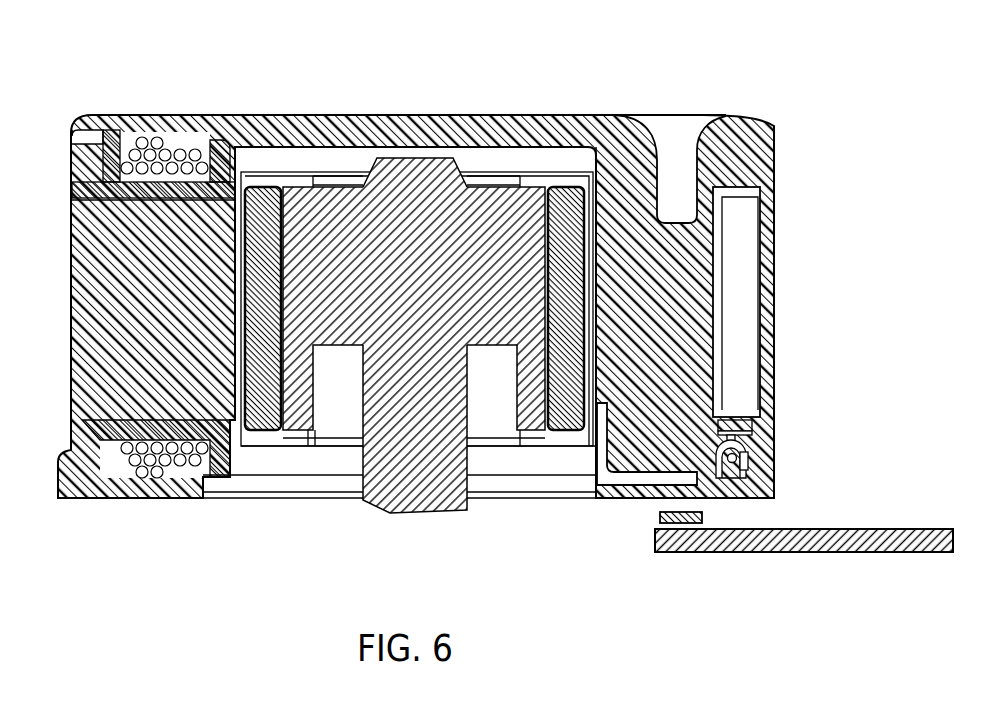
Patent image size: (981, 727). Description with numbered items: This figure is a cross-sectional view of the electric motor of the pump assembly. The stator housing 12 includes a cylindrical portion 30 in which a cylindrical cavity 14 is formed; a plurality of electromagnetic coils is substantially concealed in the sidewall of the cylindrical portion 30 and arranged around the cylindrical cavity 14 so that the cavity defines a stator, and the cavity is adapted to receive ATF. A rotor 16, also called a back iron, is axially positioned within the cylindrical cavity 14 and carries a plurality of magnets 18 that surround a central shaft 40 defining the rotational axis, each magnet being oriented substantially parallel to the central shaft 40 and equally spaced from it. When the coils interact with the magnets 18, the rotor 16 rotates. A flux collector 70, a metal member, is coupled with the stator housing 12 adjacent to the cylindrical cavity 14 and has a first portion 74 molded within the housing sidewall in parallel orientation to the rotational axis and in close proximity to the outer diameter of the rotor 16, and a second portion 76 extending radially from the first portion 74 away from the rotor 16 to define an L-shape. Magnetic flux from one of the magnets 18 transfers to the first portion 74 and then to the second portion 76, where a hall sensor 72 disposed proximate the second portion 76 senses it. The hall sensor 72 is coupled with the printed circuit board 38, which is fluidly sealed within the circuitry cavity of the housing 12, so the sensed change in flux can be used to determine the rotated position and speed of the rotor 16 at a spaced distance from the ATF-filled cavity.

The housing 12 is at (549, 106).
The cylindrical cavity 14 is at (292, 494).
The rotor 16 is at (358, 210).
The magnets 18 is at (265, 200).
The cylindrical portion 30 is at (606, 137).
The printed circuit board 38 is at (790, 553).
The central shaft 40 is at (412, 487).
The flux collector 70 is at (614, 480).
The hall sensor 72 is at (703, 519).
The first portion 74 is at (603, 452).
The second portion 76 is at (637, 483).